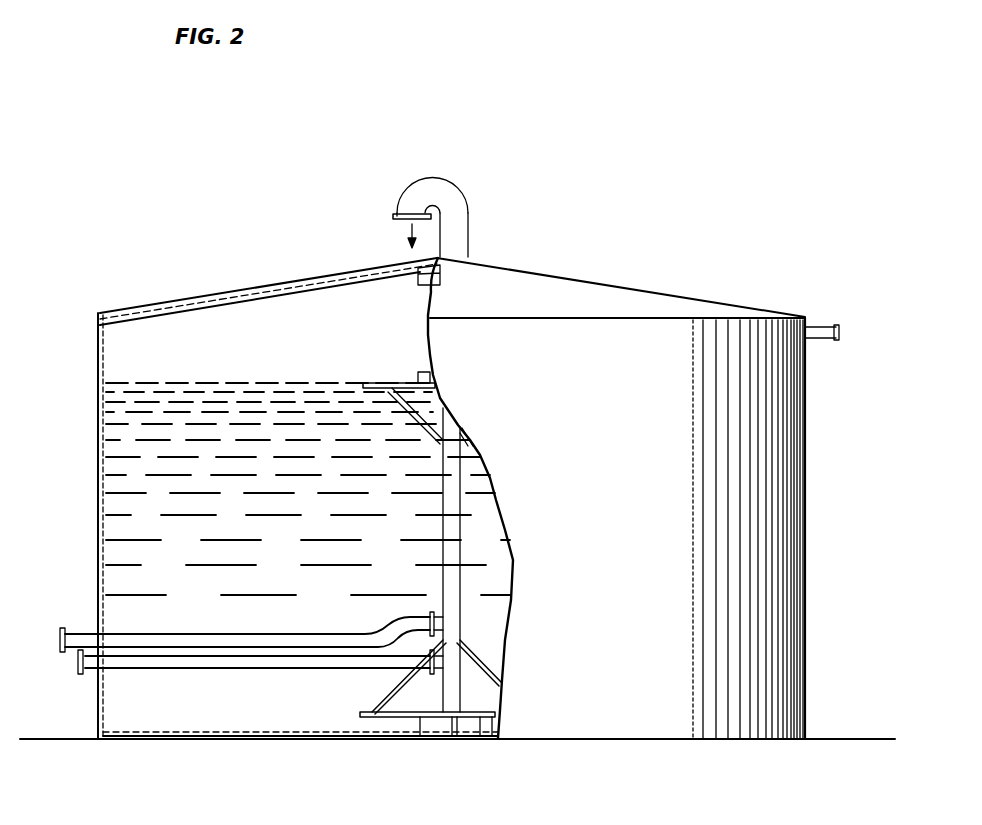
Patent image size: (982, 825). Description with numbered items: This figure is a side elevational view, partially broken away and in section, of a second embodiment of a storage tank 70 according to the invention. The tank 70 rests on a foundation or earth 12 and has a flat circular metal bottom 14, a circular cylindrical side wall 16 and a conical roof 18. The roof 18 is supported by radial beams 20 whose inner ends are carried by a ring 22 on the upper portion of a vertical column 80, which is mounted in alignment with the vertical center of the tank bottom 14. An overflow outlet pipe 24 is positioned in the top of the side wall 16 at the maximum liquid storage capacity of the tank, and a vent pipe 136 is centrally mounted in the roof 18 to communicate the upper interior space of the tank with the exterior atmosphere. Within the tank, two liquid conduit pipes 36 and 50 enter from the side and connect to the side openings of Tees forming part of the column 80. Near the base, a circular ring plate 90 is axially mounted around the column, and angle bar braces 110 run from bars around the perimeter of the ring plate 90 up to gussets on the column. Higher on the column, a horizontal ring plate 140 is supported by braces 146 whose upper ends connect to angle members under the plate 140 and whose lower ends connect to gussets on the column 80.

The foundation or earth 12 is at (848, 742).
The tank bottom 14 is at (190, 742).
The side wall 16 is at (98, 492).
The conical roof 18 is at (213, 295).
The radial beams 20 is at (253, 298).
The ring 22 is at (414, 287).
The overflow outlet pipe 24 is at (826, 338).
The liquid conduit pipe 36 is at (176, 668).
The liquid conduit pipe 50 is at (188, 633).
The tank 70 is at (624, 259).
The vertical column 80 is at (434, 521).
The circular ring plate 90 is at (392, 725).
The angle bar brace 110 is at (482, 655).
The vent pipe 136 is at (463, 232).
The horizontal ring plate 140 is at (396, 372).
The brace 146 is at (408, 412).